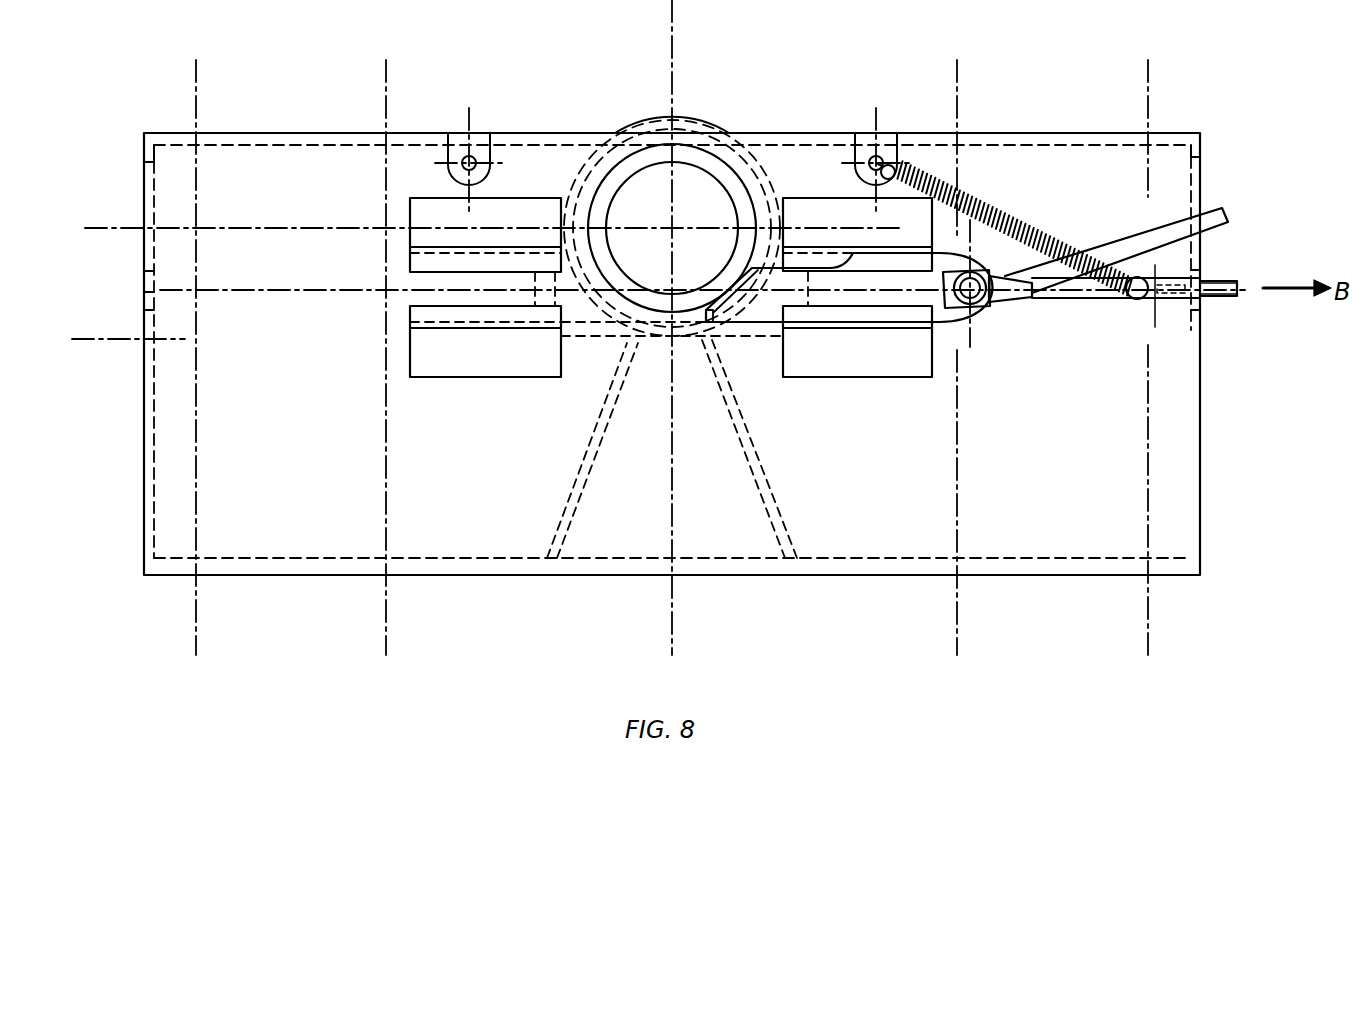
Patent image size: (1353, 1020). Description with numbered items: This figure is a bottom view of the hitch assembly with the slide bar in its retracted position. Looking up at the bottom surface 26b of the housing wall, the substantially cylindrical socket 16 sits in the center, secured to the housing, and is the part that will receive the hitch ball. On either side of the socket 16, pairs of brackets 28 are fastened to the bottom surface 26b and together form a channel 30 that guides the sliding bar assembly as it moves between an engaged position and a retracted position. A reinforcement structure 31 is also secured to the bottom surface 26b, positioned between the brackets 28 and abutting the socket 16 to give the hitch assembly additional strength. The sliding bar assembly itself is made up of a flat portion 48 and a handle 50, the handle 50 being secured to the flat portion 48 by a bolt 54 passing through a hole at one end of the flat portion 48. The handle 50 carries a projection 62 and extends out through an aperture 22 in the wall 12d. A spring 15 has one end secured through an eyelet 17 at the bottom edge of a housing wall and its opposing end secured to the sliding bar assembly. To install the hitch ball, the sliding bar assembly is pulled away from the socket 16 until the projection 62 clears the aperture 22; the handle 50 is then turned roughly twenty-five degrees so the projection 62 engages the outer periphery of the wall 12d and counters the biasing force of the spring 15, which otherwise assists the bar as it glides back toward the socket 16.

The wall 12d is at (144, 198).
The spring 15 is at (985, 205).
The socket 16 is at (690, 122).
The eyelet 17 is at (490, 145).
The aperture 22 is at (144, 310).
The bottom surface 26b is at (294, 434).
The brackets 28 is at (510, 198).
The channel 30 is at (469, 302).
The reinforcement structure 31 is at (770, 520).
The flat portion 48 is at (968, 322).
The handle 50 is at (1222, 280).
The bolt 54 is at (995, 305).
The projection 62 is at (1222, 298).